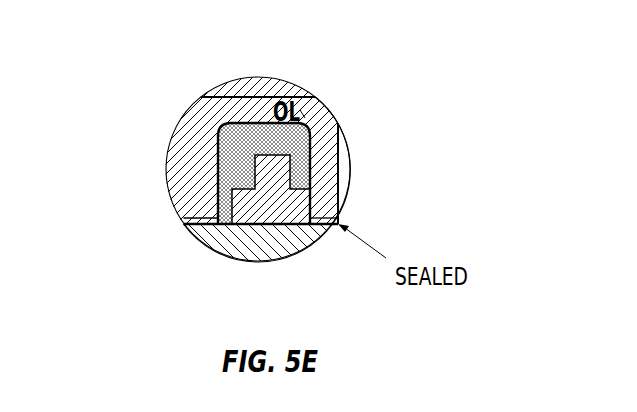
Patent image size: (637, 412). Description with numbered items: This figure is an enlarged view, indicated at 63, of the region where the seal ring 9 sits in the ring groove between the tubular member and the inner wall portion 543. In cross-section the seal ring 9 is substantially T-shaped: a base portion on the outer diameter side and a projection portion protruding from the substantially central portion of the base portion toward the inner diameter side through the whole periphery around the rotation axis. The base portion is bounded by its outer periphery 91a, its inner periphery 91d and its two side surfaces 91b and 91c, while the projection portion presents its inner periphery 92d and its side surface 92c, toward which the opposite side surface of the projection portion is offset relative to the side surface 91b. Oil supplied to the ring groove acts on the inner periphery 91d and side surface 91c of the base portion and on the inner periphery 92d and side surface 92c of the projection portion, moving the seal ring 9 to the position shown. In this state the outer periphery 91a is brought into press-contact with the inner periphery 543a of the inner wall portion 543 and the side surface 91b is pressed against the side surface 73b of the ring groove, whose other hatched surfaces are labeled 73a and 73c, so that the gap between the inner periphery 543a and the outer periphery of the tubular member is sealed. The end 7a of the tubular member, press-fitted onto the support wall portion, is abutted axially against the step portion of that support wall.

The enlarged region of liquid ejecting head 63 is at (168, 159).
The first portion of adhesive layer 73a is at (236, 82).
The side surface of ring groove 73b is at (313, 95).
The third portion of adhesive layer 73c is at (216, 121).
The inner periphery of projection portion 92d is at (257, 98).
The side surface of projection portion 92c is at (217, 160).
The seal ring 9 is at (352, 155).
The side surface of base portion 91b is at (340, 188).
The end of tubular member 7a is at (338, 221).
The side surface of base portion 91c is at (218, 209).
The inner periphery of inner wall portion 543a is at (330, 226).
The inner wall portion 543 is at (222, 238).
The inner periphery of base portion 91d is at (243, 233).
The outer periphery of base portion 91a is at (285, 235).